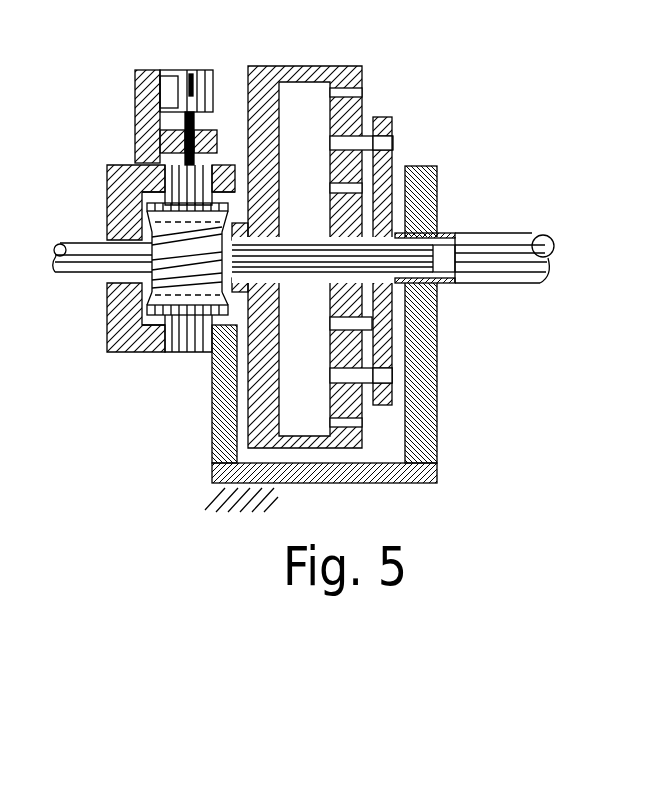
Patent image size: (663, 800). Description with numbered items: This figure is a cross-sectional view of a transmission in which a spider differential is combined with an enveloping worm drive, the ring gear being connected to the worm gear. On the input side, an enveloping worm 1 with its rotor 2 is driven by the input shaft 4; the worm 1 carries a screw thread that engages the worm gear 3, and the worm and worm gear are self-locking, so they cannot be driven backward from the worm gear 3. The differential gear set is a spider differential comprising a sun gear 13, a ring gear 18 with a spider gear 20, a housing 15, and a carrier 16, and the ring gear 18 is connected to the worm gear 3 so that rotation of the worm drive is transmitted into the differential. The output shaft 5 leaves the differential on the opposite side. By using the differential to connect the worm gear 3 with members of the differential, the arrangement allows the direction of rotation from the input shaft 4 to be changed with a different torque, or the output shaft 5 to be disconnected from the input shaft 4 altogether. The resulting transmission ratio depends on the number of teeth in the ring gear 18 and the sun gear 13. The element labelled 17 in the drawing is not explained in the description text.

The enveloping worm 1 is at (163, 250).
The rotor 2 is at (200, 293).
The worm gear 3 is at (118, 333).
The input shaft 4 is at (97, 265).
The output shaft 5 is at (477, 265).
The sun gear 13 is at (380, 118).
The housing 15 is at (437, 472).
The carrier 16 is at (393, 166).
The adjusting screw coupling 17 is at (197, 93).
The ring gear 18 is at (262, 207).
The spider gear 20 is at (348, 107).